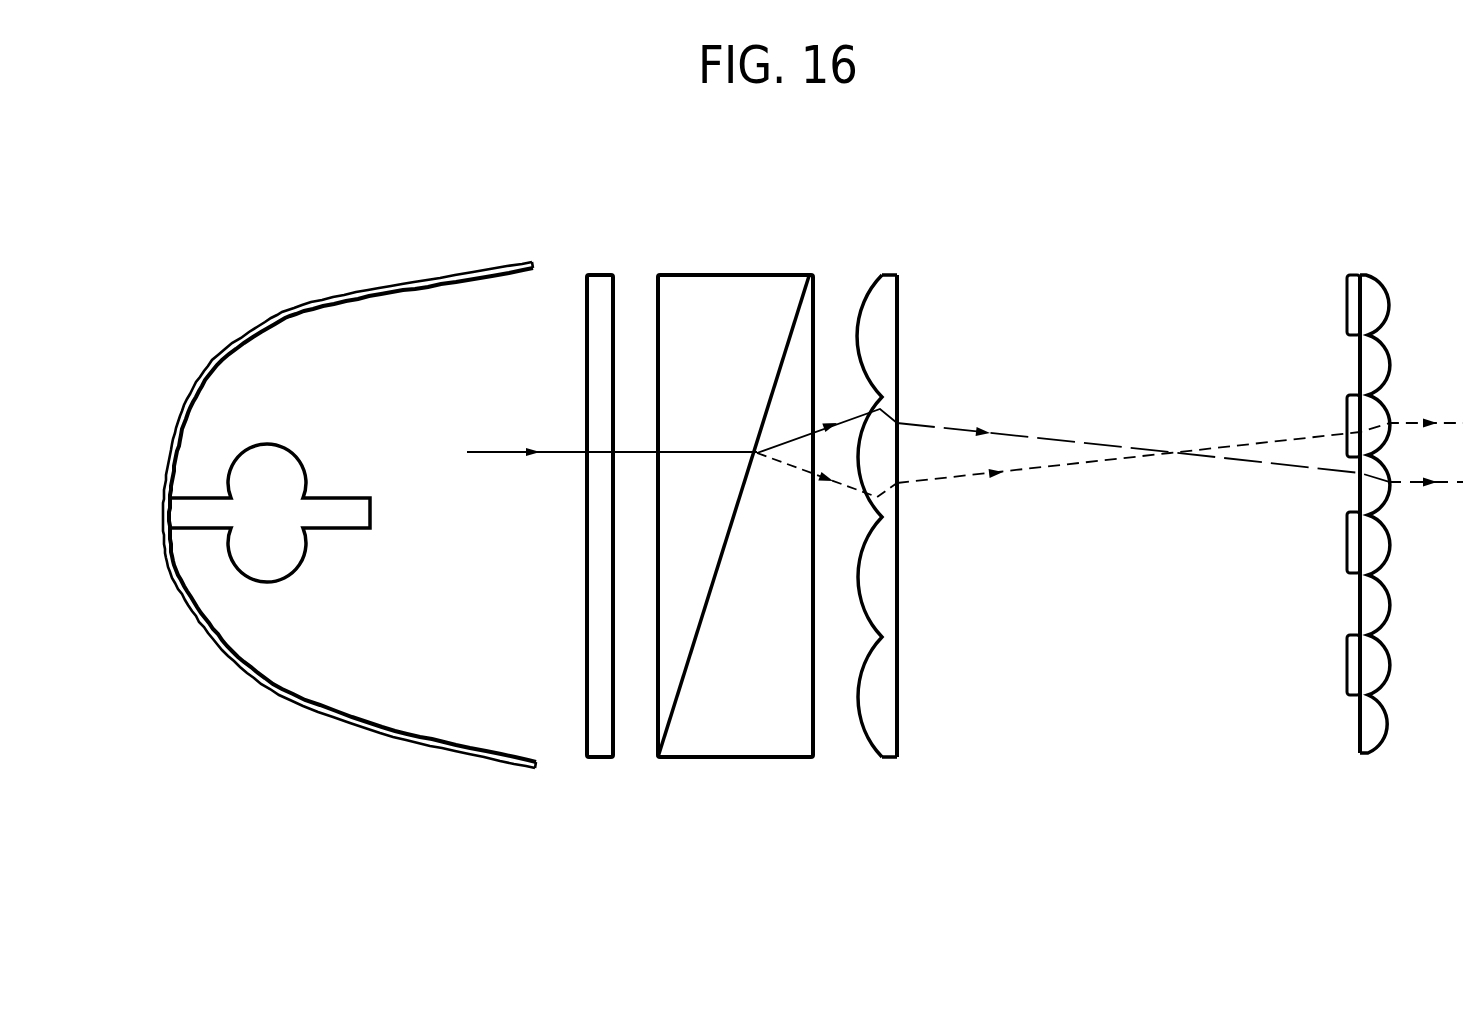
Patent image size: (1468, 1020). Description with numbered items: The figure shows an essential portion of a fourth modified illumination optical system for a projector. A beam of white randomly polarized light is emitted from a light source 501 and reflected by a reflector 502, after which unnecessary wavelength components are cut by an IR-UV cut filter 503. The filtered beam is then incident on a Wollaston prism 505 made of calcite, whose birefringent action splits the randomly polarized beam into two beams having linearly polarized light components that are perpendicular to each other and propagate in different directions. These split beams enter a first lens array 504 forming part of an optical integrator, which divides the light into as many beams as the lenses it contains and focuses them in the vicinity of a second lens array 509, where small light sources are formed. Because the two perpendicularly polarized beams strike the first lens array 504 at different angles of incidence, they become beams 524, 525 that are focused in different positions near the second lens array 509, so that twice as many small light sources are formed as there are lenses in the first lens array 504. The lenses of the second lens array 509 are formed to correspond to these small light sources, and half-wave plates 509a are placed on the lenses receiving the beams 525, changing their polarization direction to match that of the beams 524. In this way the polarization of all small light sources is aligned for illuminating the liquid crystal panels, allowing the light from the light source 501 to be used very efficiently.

The light source 501 is at (261, 497).
The reflector 502 is at (283, 697).
The IR-UV cut filter 503 is at (598, 287).
The first lens array 504 is at (882, 290).
The Wollaston prism 505 is at (730, 287).
The second lens array 509 is at (1329, 499).
The half-wave plates 509a is at (1345, 400).
The beams 524 is at (955, 428).
The beams 525 is at (1254, 442).